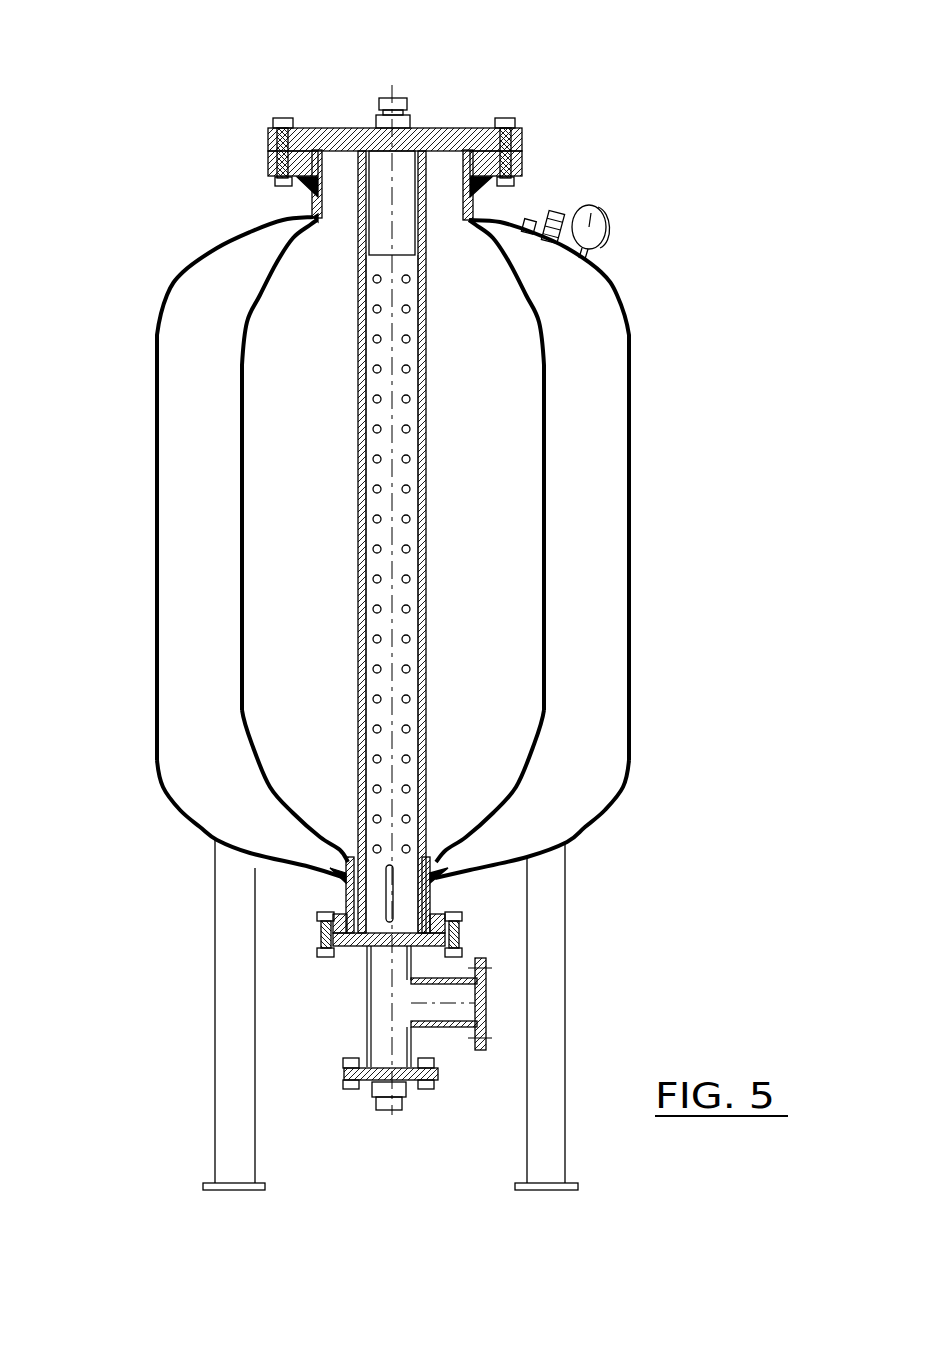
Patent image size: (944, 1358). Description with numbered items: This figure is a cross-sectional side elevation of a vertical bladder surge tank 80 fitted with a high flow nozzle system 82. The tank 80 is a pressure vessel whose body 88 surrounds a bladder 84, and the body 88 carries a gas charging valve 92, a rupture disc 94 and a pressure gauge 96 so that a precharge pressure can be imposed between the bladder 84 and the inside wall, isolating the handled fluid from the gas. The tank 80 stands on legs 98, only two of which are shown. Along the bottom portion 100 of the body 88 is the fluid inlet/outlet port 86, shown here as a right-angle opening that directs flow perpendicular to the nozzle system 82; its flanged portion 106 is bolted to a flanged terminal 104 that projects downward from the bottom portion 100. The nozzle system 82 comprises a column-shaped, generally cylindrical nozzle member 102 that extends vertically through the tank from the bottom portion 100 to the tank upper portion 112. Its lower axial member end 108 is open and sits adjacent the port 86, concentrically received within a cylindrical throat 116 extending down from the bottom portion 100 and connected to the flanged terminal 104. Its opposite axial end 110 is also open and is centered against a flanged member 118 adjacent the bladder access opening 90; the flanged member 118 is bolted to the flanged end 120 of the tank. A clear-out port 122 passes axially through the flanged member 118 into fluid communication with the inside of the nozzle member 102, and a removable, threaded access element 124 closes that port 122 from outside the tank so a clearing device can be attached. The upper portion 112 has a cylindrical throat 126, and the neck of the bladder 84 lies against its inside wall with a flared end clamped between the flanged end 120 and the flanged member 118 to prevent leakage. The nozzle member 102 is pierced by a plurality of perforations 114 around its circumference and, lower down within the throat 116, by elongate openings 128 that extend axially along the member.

The vertical bladder surge tank 80 is at (708, 275).
The high flow nozzle system 82 is at (430, 726).
The bladder 84 is at (548, 478).
The fluid inlet/outlet port 86 is at (470, 1005).
The body 88 is at (204, 268).
The bladder access opening 90 is at (453, 150).
The gas charging valve 92 is at (556, 210).
The rupture disc 94 is at (552, 206).
The pressure gauge 96 is at (612, 212).
The legs 98 is at (560, 908).
The bottom portion 100 is at (346, 878).
The nozzle member 102 is at (426, 595).
The flanged terminal 104 is at (449, 912).
The flanged portion 106 is at (352, 946).
The axial member end 108 is at (383, 946).
The opposite axial end 110 is at (381, 150).
The tank upper portion 112 is at (302, 208).
The perforations 114 is at (408, 459).
The cylindrical throat 116 is at (445, 878).
The flanged member 118 is at (313, 137).
The flanged end 120 is at (529, 220).
The clear-out port 122 is at (410, 166).
The access element 124 is at (395, 107).
The cylindrical throat 126 is at (318, 196).
The elongate openings 128 is at (393, 864).